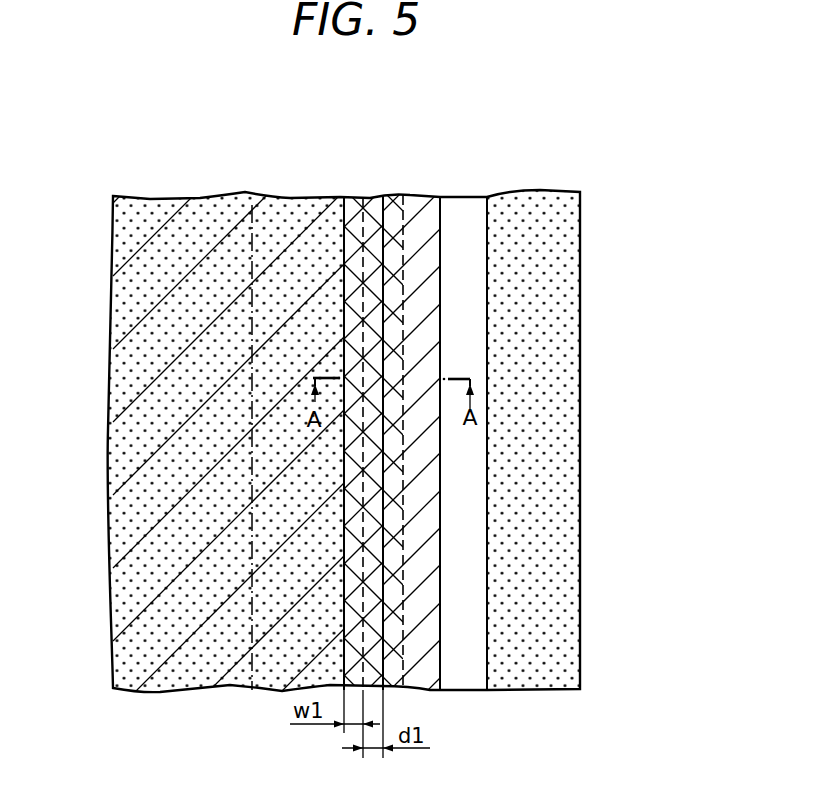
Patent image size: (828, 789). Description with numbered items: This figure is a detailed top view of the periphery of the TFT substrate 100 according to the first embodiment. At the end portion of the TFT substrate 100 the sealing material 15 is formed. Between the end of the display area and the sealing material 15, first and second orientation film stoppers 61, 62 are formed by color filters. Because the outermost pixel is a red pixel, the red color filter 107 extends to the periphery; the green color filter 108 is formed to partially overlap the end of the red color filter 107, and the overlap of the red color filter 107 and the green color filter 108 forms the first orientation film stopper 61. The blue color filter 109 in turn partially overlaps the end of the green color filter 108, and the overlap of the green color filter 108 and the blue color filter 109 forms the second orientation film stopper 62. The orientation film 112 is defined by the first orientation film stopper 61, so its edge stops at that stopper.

The TFT substrate 100 is at (252, 205).
The red color filter 107 is at (198, 227).
The orientation film 112 is at (287, 225).
The first orientation film stopper 61 is at (353, 212).
The green color filter 108 is at (377, 212).
The second orientation film stopper 62 is at (397, 212).
The blue color filter 109 is at (420, 228).
The sealing material 15 is at (556, 260).